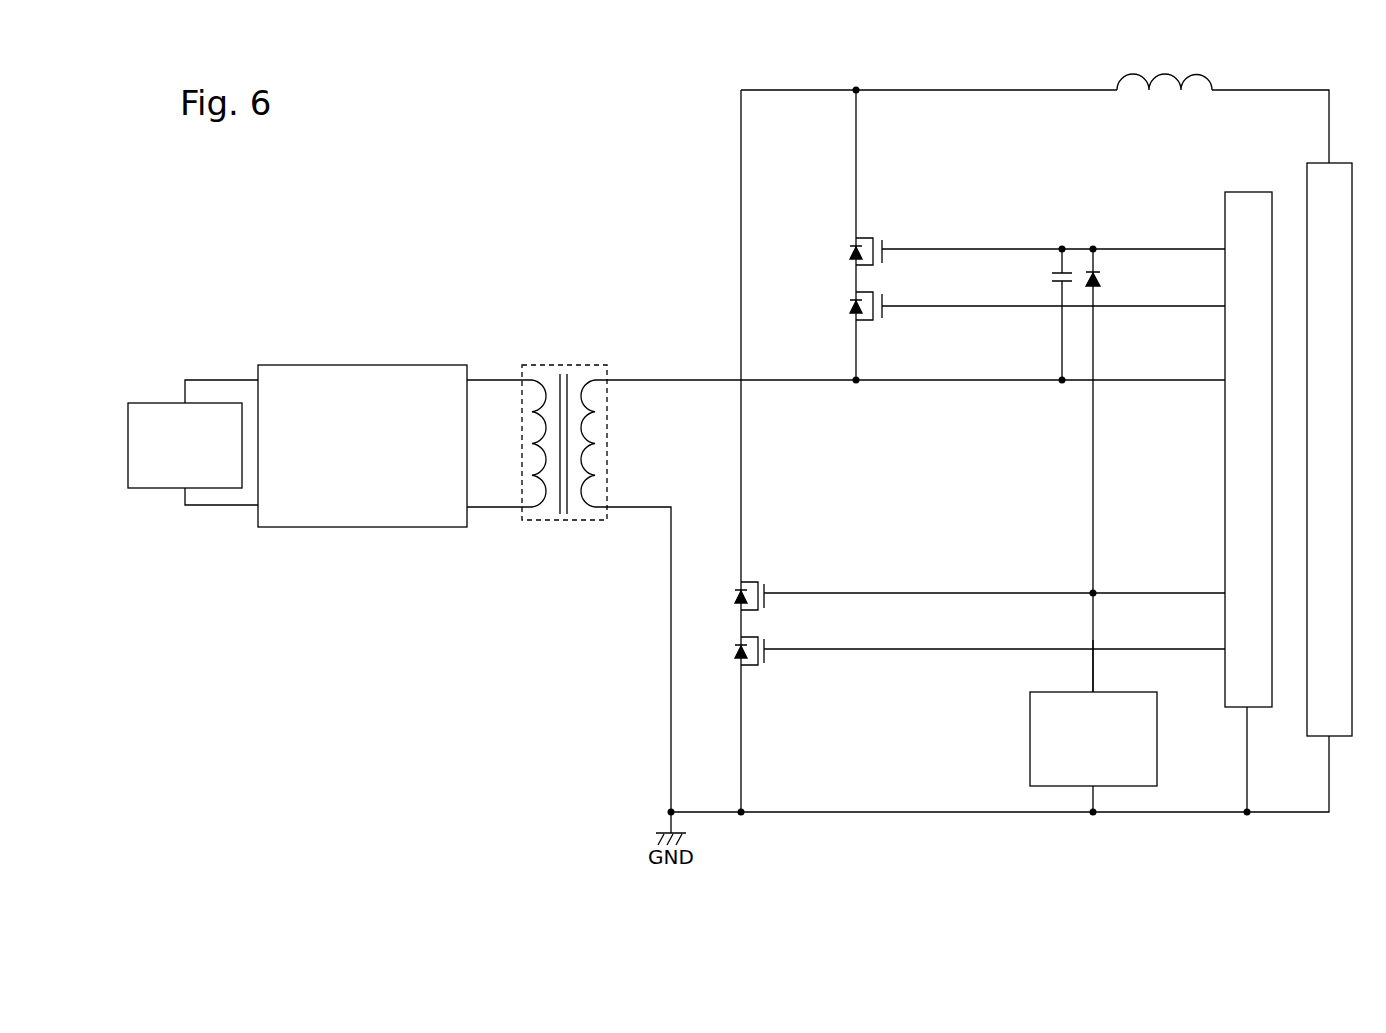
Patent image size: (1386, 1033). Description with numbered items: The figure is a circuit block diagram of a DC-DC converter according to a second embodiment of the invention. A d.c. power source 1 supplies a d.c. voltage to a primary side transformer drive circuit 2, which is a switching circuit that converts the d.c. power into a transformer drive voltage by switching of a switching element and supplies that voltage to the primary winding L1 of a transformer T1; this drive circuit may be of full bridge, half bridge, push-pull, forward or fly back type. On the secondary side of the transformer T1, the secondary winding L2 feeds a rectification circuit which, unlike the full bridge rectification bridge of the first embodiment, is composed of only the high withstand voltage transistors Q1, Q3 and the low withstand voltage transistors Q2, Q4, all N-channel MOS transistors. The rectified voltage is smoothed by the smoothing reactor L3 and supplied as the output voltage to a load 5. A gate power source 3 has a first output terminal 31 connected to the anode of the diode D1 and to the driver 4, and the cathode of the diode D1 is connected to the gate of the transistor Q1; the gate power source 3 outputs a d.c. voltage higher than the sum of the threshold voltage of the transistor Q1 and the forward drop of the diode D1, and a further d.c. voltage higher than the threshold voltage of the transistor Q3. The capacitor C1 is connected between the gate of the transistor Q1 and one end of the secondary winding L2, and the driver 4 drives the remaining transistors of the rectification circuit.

The d.c. power source 1 is at (159, 403).
The primary side transformer drive circuit 2 is at (360, 365).
The gate power source 3 is at (1157, 739).
The first output terminal 31 is at (1108, 667).
The driver 4 is at (1245, 192).
The load 5 is at (1343, 163).
The transformer T1 is at (566, 420).
The primary winding L1 is at (532, 457).
The secondary winding L2 is at (602, 456).
The smoothing reactor L3 is at (1162, 73).
The high withstand voltage transistor Q1 is at (886, 246).
The low withstand voltage transistor Q2 is at (886, 302).
The high withstand voltage transistor Q3 is at (770, 590).
The low withstand voltage transistor Q4 is at (770, 646).
The capacitor C1 is at (1051, 276).
The diode D1 is at (1103, 278).